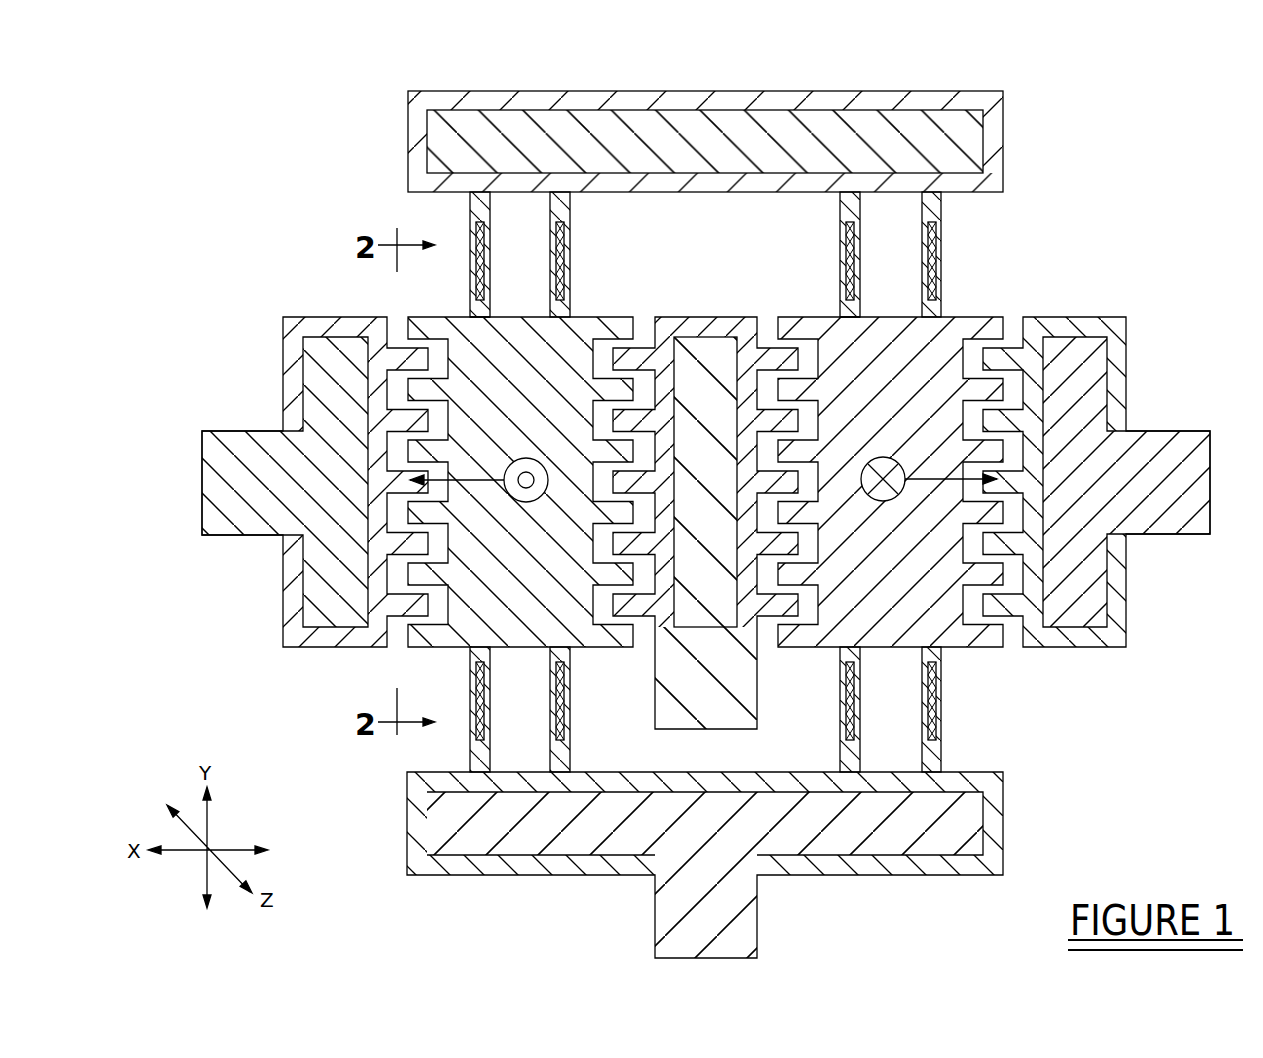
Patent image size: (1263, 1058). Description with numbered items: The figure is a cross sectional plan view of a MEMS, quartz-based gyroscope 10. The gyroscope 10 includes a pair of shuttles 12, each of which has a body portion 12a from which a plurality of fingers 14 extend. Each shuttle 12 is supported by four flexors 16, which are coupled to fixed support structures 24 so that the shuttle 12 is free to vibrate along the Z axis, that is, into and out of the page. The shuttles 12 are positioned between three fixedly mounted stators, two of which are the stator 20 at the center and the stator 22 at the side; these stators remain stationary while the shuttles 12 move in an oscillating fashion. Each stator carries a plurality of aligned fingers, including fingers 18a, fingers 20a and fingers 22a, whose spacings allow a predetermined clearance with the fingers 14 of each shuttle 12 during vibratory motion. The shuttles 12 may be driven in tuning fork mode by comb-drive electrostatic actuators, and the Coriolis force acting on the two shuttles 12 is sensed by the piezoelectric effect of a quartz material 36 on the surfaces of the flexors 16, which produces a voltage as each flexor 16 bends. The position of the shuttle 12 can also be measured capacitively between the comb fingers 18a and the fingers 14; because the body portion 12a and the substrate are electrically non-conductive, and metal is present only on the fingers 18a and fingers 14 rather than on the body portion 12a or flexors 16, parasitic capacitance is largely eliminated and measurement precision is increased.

The gyroscope 10 is at (1062, 107).
The shuttle 12 is at (613, 464).
The body portion 12a is at (468, 580).
The fingers 14 is at (433, 330).
The flexors 16 is at (708, 477).
The fingers 18a is at (410, 600).
The stator 20 is at (715, 493).
The fingers 20a is at (790, 605).
The stator 22 is at (706, 502).
The fingers 22a is at (1015, 607).
The fixed support structures 24 is at (555, 127).
The quartz material 36 is at (560, 238).